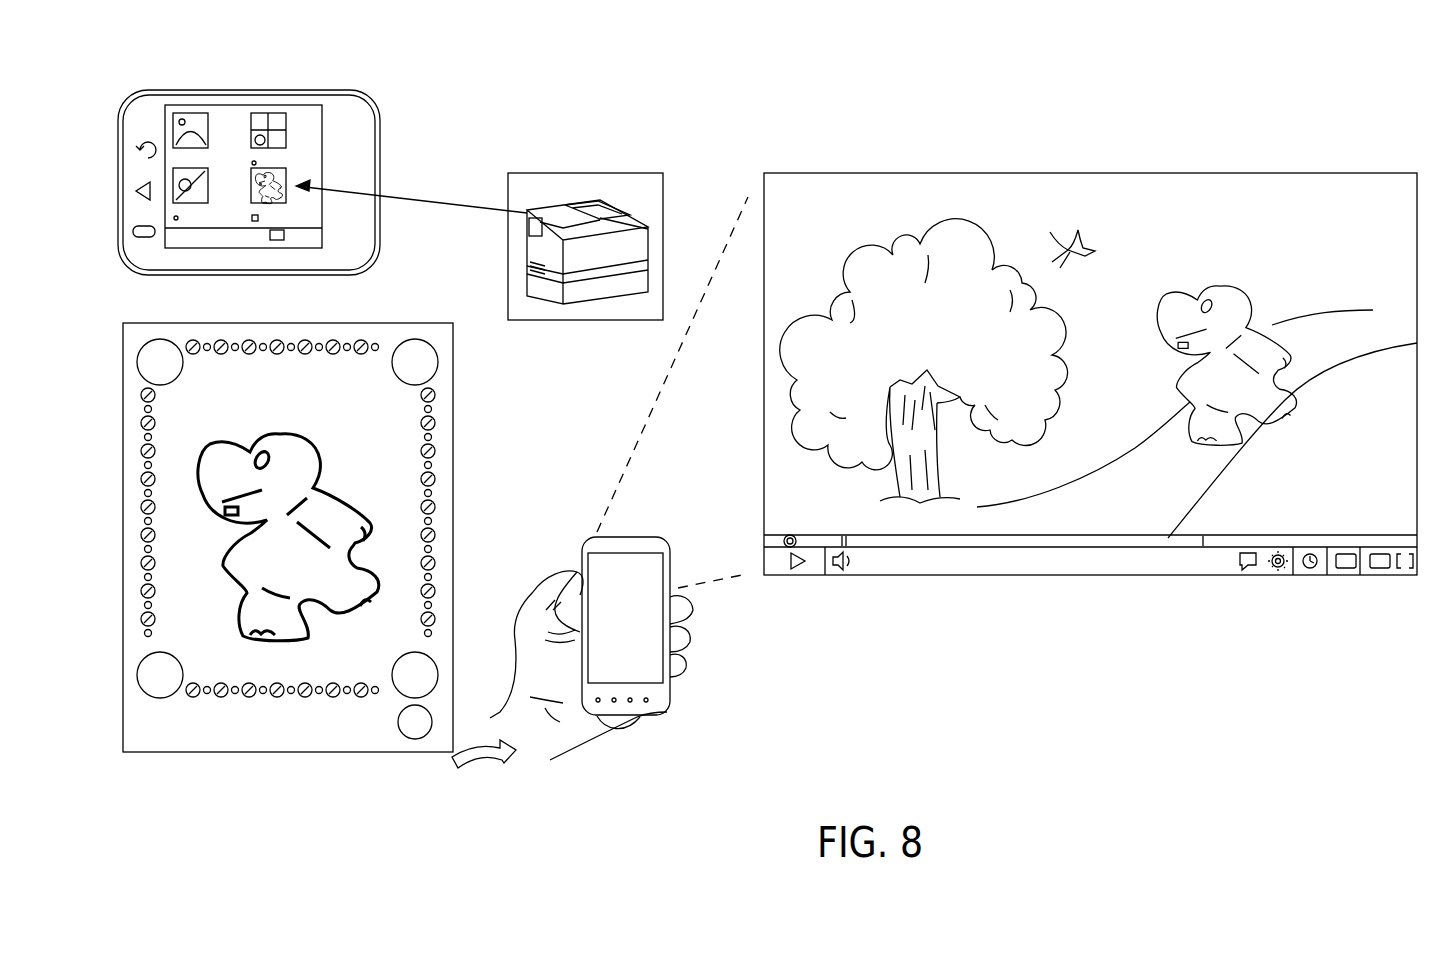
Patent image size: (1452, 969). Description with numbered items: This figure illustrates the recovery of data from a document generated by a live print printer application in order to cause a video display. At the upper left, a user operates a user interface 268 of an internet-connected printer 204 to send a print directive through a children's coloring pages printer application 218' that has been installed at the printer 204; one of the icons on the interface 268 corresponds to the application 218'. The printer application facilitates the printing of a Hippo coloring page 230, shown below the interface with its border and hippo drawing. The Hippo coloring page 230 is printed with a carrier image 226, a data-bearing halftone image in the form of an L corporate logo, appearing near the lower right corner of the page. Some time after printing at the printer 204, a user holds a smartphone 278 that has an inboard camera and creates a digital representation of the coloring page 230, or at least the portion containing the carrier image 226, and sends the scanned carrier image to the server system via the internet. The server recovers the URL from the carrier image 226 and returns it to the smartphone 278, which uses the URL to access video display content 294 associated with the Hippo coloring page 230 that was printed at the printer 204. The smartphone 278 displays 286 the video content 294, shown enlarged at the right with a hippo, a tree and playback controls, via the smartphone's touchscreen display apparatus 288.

The user interface 268 is at (218, 88).
The children's coloring pages printer application 218' is at (323, 176).
The internet-connected printer 204 is at (533, 325).
The Hippo coloring page 230 is at (190, 760).
The carrier image 226 is at (413, 742).
The smartphone 278 is at (680, 628).
The touchscreen display apparatus 288 is at (633, 628).
The display of the video content 286 is at (1112, 118).
The video display content 294 is at (856, 170).